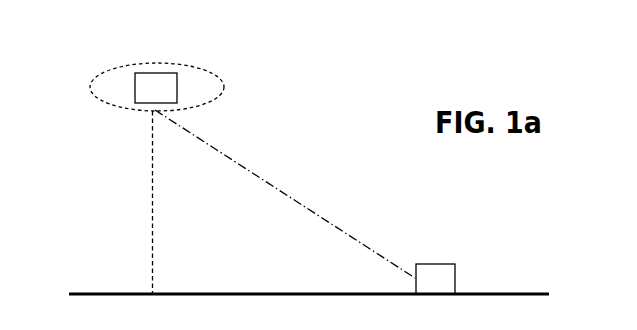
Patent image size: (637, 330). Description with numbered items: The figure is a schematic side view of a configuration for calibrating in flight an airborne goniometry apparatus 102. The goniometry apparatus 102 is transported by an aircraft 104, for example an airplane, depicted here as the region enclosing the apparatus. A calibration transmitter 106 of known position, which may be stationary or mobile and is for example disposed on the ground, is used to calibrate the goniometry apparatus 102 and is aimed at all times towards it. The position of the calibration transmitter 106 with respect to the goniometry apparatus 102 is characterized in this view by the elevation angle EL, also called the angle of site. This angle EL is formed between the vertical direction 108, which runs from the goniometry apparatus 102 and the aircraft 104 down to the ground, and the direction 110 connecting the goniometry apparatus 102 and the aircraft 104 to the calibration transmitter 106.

The goniometry apparatus 102 is at (143, 96).
The aircraft 104 is at (223, 82).
The calibration transmitter 106 is at (424, 286).
The vertical direction 108 is at (153, 219).
The direction connecting the goniometry apparatus and the calibration transmitter 110 is at (307, 207).
The elevation angle EL is at (189, 139).